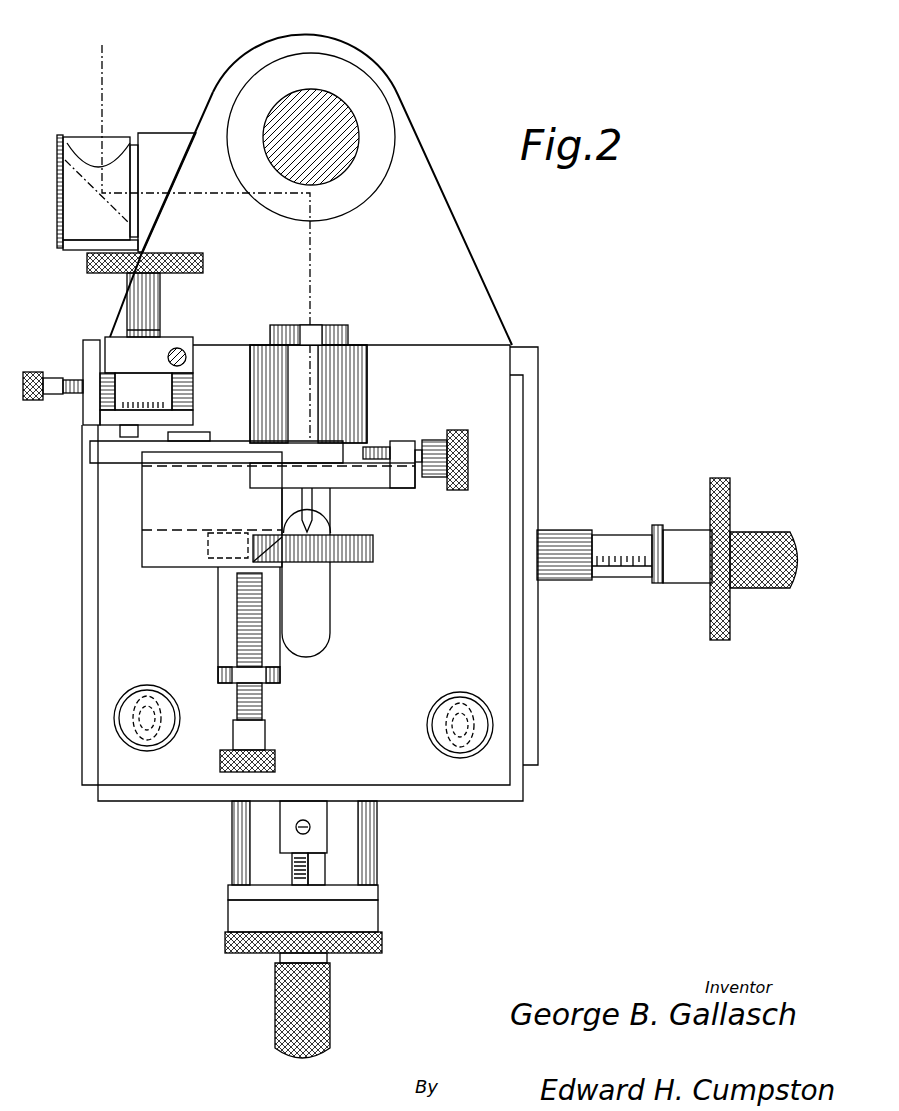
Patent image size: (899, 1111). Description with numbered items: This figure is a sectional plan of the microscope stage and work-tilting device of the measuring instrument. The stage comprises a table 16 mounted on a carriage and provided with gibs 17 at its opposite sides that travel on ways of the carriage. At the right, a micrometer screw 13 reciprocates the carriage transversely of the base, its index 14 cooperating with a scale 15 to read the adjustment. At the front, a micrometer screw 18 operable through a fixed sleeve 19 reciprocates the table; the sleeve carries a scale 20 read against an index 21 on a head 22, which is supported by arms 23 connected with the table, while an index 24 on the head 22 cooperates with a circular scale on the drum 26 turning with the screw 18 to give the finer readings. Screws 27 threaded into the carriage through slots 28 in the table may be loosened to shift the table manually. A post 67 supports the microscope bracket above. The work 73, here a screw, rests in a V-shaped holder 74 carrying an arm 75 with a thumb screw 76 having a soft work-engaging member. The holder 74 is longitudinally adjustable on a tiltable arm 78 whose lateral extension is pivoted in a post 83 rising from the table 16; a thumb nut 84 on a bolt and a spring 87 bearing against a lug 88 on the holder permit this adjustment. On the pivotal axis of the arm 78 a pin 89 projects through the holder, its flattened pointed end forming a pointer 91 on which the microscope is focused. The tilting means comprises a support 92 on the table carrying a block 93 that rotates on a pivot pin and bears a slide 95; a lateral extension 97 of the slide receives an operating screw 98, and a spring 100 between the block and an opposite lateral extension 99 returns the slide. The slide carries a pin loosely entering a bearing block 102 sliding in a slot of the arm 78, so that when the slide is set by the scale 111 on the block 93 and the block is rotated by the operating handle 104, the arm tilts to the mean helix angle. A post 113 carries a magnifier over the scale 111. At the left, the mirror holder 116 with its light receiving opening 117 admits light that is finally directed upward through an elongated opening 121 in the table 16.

The micrometer screw 13 is at (770, 516).
The index 14 is at (660, 540).
The scale 15 is at (622, 565).
The table 16 is at (318, 417).
The gibs 17 is at (85, 655).
The micrometer screw 18 is at (330, 992).
The fixed sleeve 19 is at (325, 866).
The scale 20 is at (292, 862).
The index 21 is at (290, 880).
The head 22 is at (378, 893).
The arms 23 is at (240, 860).
The index 24 is at (305, 888).
The drum 26 is at (378, 925).
The screws 27 is at (183, 712).
The slots 28 is at (160, 732).
The post 67 is at (352, 103).
The work 73 is at (373, 548).
The V-shaped holder 74 is at (155, 492).
The arm 75 is at (228, 645).
The thumb screw 76 is at (263, 705).
The tiltable arm 78 is at (238, 447).
The post 83 is at (367, 403).
The thumb nut 84 is at (438, 430).
The spring 87 is at (378, 470).
The lug 88 is at (407, 442).
The pin 89 is at (329, 507).
The pointer 91 is at (320, 523).
The support 92 is at (195, 359).
The block 93 is at (133, 380).
The slide 95 is at (180, 418).
The lateral extension 97 is at (83, 409).
The operating screw 98 is at (55, 380).
The lateral extension 99 is at (193, 410).
The spring 100 is at (181, 388).
The bearing block 102 is at (120, 452).
The operating handle 104 is at (161, 300).
The scale 111 is at (140, 418).
The post 113 is at (182, 350).
The holder 116 is at (73, 218).
The light receiving opening 117 is at (83, 152).
The elongated opening 121 is at (326, 603).